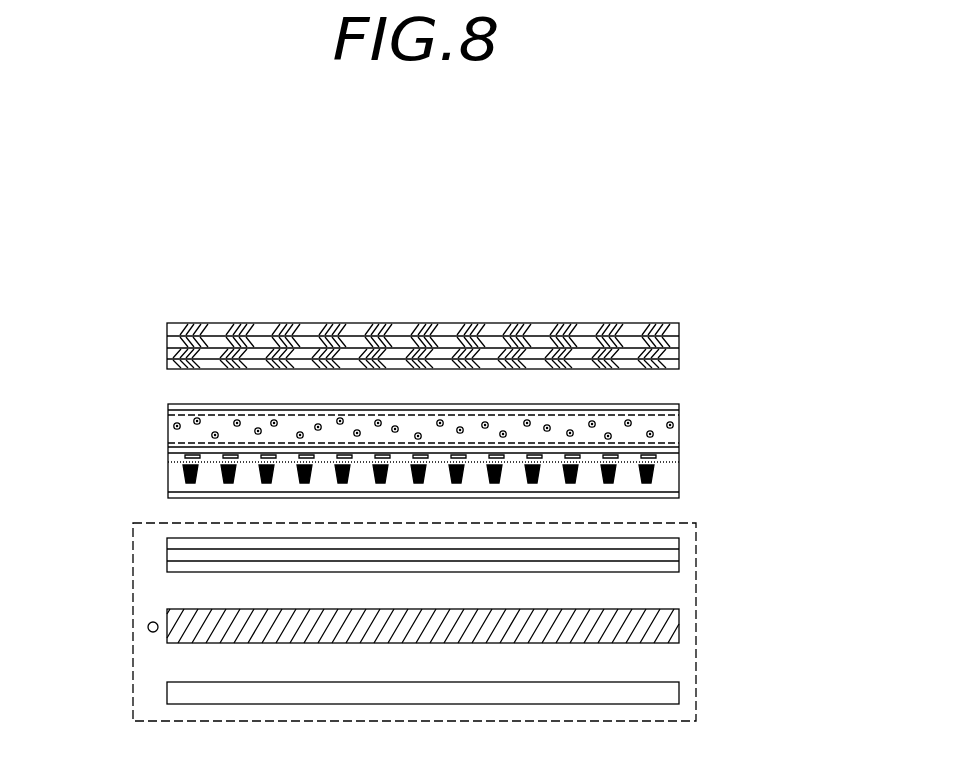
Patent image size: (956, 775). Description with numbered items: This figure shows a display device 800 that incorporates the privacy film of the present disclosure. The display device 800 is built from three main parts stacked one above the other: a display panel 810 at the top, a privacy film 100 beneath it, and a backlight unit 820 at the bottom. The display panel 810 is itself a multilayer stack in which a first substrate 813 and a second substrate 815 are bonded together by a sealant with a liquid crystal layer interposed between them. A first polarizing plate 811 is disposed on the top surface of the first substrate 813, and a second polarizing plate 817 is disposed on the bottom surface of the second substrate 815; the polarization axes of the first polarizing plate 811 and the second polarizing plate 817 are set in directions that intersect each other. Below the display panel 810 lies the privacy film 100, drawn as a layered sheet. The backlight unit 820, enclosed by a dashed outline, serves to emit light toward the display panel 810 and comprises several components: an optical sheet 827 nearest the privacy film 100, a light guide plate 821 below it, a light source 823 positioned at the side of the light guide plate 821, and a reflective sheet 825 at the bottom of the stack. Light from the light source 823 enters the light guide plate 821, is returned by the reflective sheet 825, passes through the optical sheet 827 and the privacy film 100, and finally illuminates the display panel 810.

The display device 800 is at (173, 275).
The display panel 810 is at (491, 345).
The first polarizing plate 811 is at (672, 329).
The first substrate 813 is at (670, 341).
The second substrate 815 is at (670, 353).
The second polarizing plate 817 is at (462, 374).
The privacy film 100 is at (684, 448).
The backlight unit 820 is at (133, 565).
The light guide plate 821 is at (670, 627).
The light source 823 is at (148, 627).
The reflective sheet 825 is at (670, 694).
The optical sheet 827 is at (692, 538).